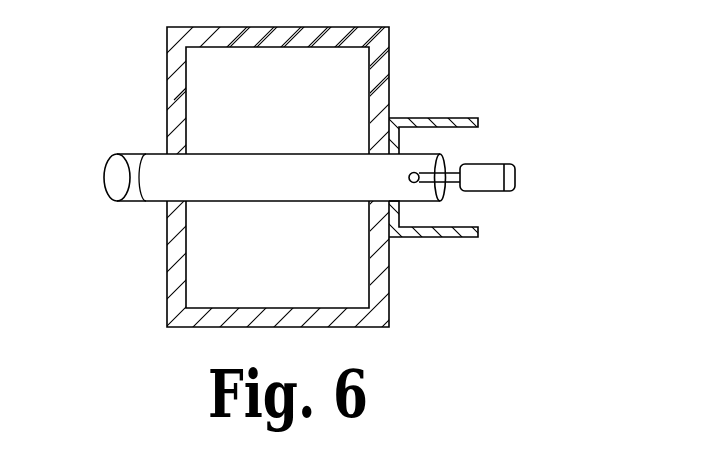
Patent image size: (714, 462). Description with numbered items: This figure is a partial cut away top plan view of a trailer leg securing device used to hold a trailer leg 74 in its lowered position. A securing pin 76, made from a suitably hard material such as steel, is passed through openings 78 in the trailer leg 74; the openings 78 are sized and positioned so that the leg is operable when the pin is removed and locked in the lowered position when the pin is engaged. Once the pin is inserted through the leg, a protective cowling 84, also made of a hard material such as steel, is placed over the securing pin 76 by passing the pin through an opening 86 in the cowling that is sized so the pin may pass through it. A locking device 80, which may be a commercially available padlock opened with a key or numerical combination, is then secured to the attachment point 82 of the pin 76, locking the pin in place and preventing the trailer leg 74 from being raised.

The trailer leg 74 is at (390, 60).
The securing pin 76 is at (118, 203).
The openings 78 is at (165, 153).
The locking device 80 is at (517, 177).
The attachment point 82 is at (424, 155).
The protective cowling 84 is at (461, 238).
The opening 86 is at (410, 153).